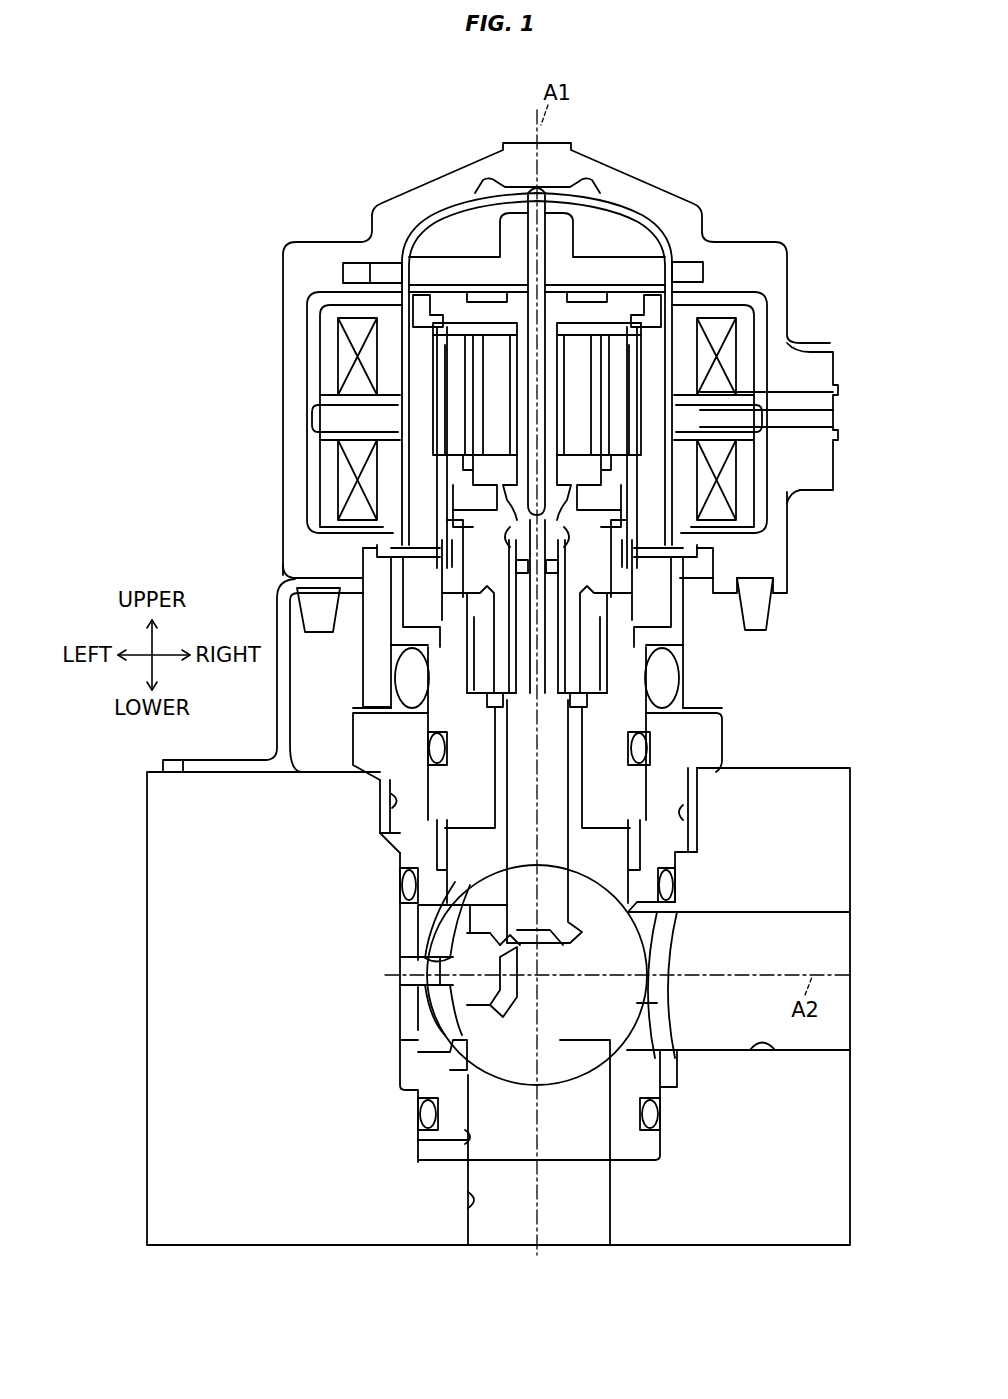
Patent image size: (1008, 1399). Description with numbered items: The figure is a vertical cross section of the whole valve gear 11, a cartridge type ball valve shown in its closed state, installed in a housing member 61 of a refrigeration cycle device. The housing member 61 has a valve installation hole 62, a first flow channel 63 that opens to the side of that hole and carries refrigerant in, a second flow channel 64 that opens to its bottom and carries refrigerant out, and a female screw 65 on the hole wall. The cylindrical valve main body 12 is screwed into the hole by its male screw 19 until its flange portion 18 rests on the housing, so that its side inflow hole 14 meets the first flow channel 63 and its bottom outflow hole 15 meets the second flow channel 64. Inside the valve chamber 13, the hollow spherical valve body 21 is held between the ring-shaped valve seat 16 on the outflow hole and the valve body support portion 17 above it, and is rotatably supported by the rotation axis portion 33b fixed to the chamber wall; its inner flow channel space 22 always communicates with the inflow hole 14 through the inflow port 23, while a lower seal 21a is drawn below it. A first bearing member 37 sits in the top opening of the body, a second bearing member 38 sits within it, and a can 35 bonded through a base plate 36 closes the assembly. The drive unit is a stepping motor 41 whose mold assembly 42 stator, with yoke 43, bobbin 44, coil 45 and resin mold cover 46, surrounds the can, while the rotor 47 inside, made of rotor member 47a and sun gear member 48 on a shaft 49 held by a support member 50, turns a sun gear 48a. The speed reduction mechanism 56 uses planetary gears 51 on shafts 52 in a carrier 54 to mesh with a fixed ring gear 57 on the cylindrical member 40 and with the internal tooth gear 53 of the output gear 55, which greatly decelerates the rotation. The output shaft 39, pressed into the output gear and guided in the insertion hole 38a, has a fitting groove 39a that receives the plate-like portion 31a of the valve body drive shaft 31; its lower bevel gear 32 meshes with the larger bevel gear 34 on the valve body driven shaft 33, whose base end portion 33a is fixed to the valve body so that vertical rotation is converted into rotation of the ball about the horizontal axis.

The valve gear 11 is at (360, 192).
The valve main body 12 is at (680, 838).
The valve chamber 13 is at (470, 1002).
The inflow hole 14 is at (690, 1052).
The outflow hole 15 is at (465, 1137).
The valve seat 16 is at (460, 1060).
The valve body support portion 17 is at (440, 880).
The flange portion 18 is at (723, 750).
The male screw 19 is at (400, 825).
The valve body 21 is at (660, 882).
The lower seal ring 21a is at (440, 1090).
The flow channel space 22 is at (660, 945).
The inflow port 23 is at (660, 1003).
The valve body drive shaft 31 is at (570, 731).
The plate-like portion 31a is at (497, 548).
The bevel gear 32 is at (525, 950).
The valve body driven shaft 33 is at (490, 1035).
The base end portion 33a is at (450, 960).
The rotation axis portion 33b is at (420, 990).
The bevel gear 34 is at (460, 918).
The can 35 is at (606, 205).
The base plate 36 is at (673, 640).
The first bearing member 37 is at (633, 603).
The second bearing member 38 is at (647, 585).
The insertion hole 38a is at (515, 528).
The output shaft 39 is at (570, 507).
The fitting groove 39a is at (670, 548).
The cylindrical member 40 is at (797, 455).
The stepping motor 41 is at (735, 228).
The mold assembly 42 is at (789, 246).
The yoke 43 is at (760, 375).
The bobbin 44 is at (745, 308).
The coil 45 is at (730, 340).
The resin mold cover 46 is at (655, 190).
The rotor 47 is at (430, 285).
The rotor member 47a is at (408, 290).
The sun gear member 48 is at (458, 300).
The sun gear 48a is at (447, 335).
The shaft 49 is at (556, 210).
The support member 50 is at (531, 212).
The planetary gear 51 is at (478, 360).
The shaft 52 is at (490, 400).
The internal tooth gear 53 is at (500, 425).
The carrier 54 is at (448, 453).
The output gear 55 is at (470, 478).
The speed reduction mechanism 56 is at (505, 485).
The ring gear 57 is at (455, 318).
The housing member 61 is at (810, 768).
The valve installation hole 62 is at (690, 806).
The first flow channel 63 is at (762, 1050).
The second flow channel 64 is at (475, 1200).
The female screw 65 is at (390, 790).